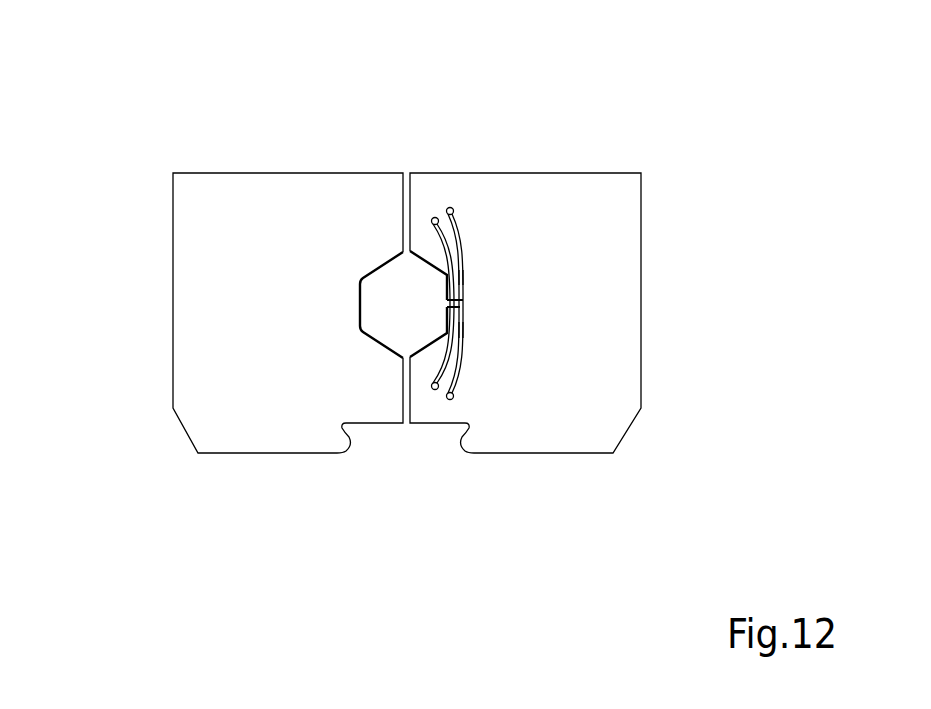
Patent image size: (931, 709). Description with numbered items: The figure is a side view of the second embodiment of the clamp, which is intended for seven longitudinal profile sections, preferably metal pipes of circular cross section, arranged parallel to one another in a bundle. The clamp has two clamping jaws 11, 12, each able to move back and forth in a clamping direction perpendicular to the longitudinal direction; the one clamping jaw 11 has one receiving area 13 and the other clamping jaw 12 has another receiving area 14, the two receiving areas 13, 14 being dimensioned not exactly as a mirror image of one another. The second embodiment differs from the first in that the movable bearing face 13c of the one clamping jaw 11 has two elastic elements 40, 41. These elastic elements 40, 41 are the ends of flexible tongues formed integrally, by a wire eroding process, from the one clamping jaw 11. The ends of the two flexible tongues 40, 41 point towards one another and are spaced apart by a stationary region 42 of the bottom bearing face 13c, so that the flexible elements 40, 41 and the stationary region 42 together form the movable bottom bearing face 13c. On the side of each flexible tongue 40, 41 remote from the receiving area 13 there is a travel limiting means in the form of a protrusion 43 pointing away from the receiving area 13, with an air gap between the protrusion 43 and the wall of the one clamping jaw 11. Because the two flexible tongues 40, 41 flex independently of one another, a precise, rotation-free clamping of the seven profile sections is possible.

The clamping jaw 11 is at (591, 223).
The clamping jaw 12 is at (230, 360).
The receiving area 13 is at (427, 277).
The movable bearing face 13c is at (460, 303).
The receiving area 14 is at (368, 312).
The elastic element 40 is at (462, 222).
The elastic element 41 is at (457, 385).
The stationary region 42 is at (456, 306).
The protrusion 43 is at (465, 277).